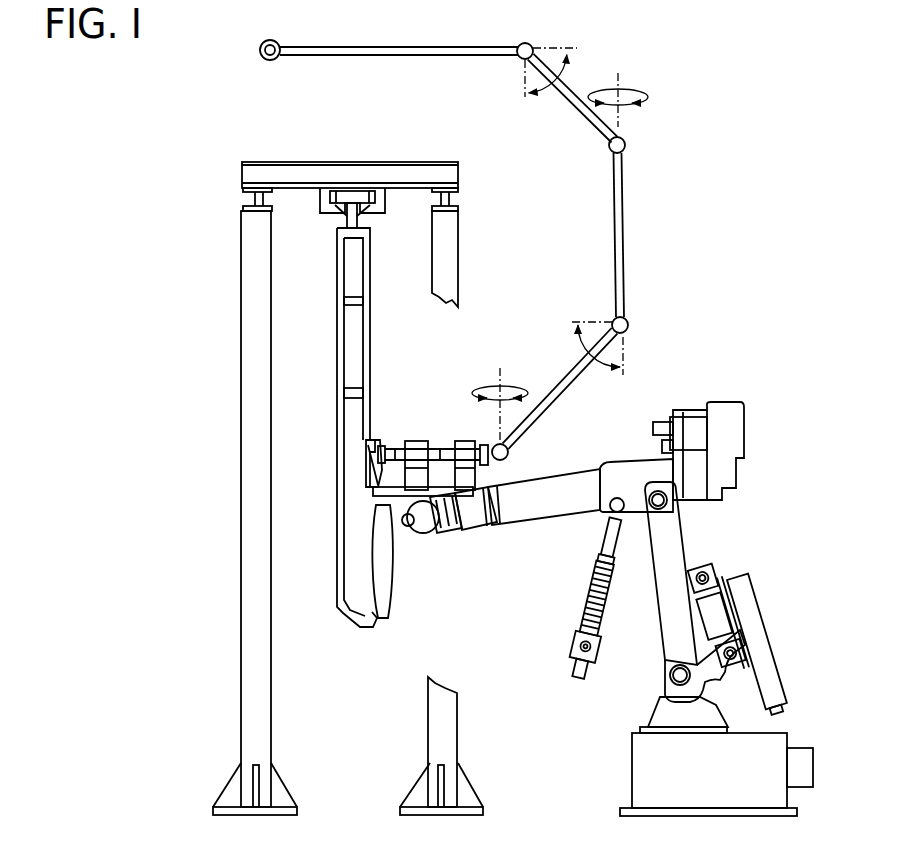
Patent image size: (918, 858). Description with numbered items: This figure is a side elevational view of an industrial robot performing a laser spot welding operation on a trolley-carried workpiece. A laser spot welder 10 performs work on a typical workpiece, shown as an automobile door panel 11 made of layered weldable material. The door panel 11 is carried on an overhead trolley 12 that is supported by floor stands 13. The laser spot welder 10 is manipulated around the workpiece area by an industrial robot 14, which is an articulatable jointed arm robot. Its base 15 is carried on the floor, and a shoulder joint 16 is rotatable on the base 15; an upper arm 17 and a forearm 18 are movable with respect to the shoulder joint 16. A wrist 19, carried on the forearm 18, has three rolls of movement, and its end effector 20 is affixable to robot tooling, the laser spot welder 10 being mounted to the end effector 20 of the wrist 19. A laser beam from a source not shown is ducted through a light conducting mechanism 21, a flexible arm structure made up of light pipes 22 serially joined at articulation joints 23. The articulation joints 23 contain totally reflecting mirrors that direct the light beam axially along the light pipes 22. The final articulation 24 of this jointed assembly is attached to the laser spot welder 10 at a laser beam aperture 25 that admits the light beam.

The laser spot welder 10 is at (408, 414).
The automobile door panel 11 is at (387, 593).
The overhead trolley 12 is at (373, 213).
The floor stands 13 is at (271, 255).
The industrial robot 14 is at (752, 470).
The base 15 is at (704, 791).
The shoulder joint 16 is at (652, 707).
The upper arm 17 is at (681, 533).
The forearm 18 is at (552, 512).
The wrist 19 is at (422, 535).
The end effector 20 is at (388, 507).
The light conducting mechanism 21 is at (580, 242).
The light pipes 22 is at (587, 118).
The articulation joints 23 is at (525, 43).
The final articulation 24 is at (508, 457).
The laser beam aperture 25 is at (488, 442).